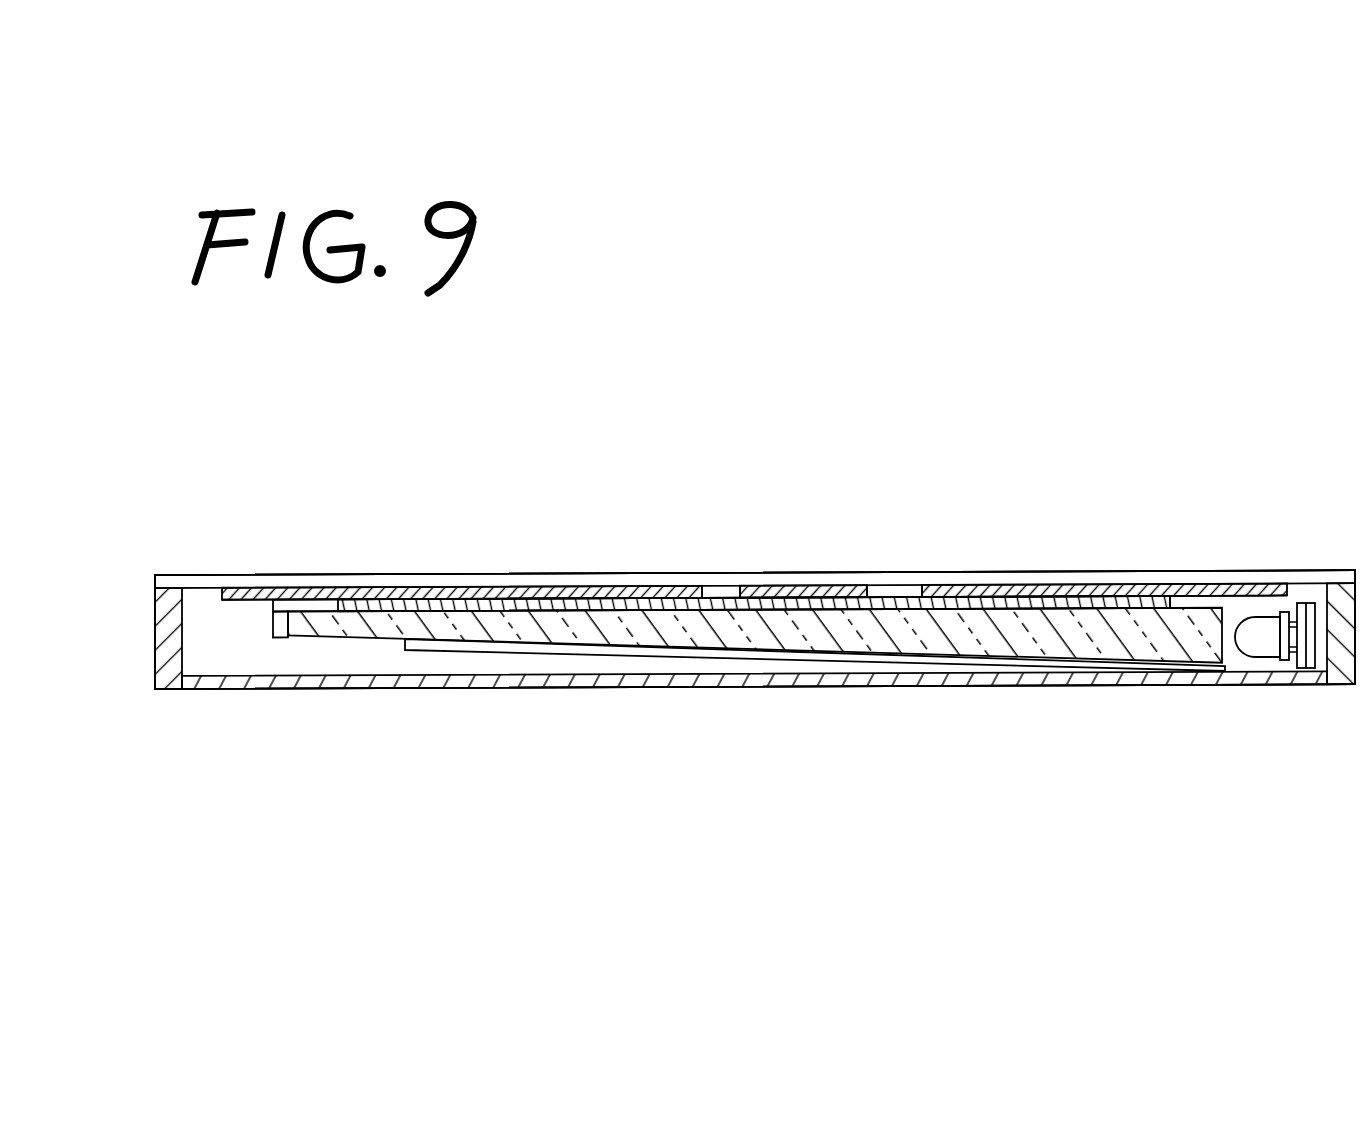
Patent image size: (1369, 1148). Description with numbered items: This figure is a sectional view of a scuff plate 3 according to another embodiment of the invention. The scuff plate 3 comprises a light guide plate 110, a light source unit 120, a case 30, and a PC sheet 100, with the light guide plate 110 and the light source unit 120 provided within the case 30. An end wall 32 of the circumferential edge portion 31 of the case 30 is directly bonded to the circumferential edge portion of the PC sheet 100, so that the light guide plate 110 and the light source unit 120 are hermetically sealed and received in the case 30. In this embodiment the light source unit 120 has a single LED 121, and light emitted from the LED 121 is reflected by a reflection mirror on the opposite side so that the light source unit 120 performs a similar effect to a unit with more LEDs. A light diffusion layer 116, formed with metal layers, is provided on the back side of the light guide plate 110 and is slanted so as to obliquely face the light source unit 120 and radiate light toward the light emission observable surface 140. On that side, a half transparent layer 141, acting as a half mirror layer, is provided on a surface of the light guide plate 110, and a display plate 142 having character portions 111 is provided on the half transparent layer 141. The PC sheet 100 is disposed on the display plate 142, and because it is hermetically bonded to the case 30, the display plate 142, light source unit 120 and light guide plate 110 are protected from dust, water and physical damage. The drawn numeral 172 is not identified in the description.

The scuff plate 3 is at (772, 402).
The case 30 is at (878, 689).
The circumferential edge portion 31 is at (153, 633).
The end wall 32 is at (158, 577).
The PC sheet 100 is at (1036, 571).
The light guide plate 110 is at (828, 624).
The character portions 111 is at (550, 585).
The light diffusion layer 116 is at (508, 651).
The light source unit 120 is at (1307, 604).
The LED 121 is at (1260, 637).
The light emission observable surface 140 is at (722, 586).
The half transparent layer 141 is at (393, 584).
The display plate 142 is at (615, 585).
The positioning block 172 is at (282, 632).